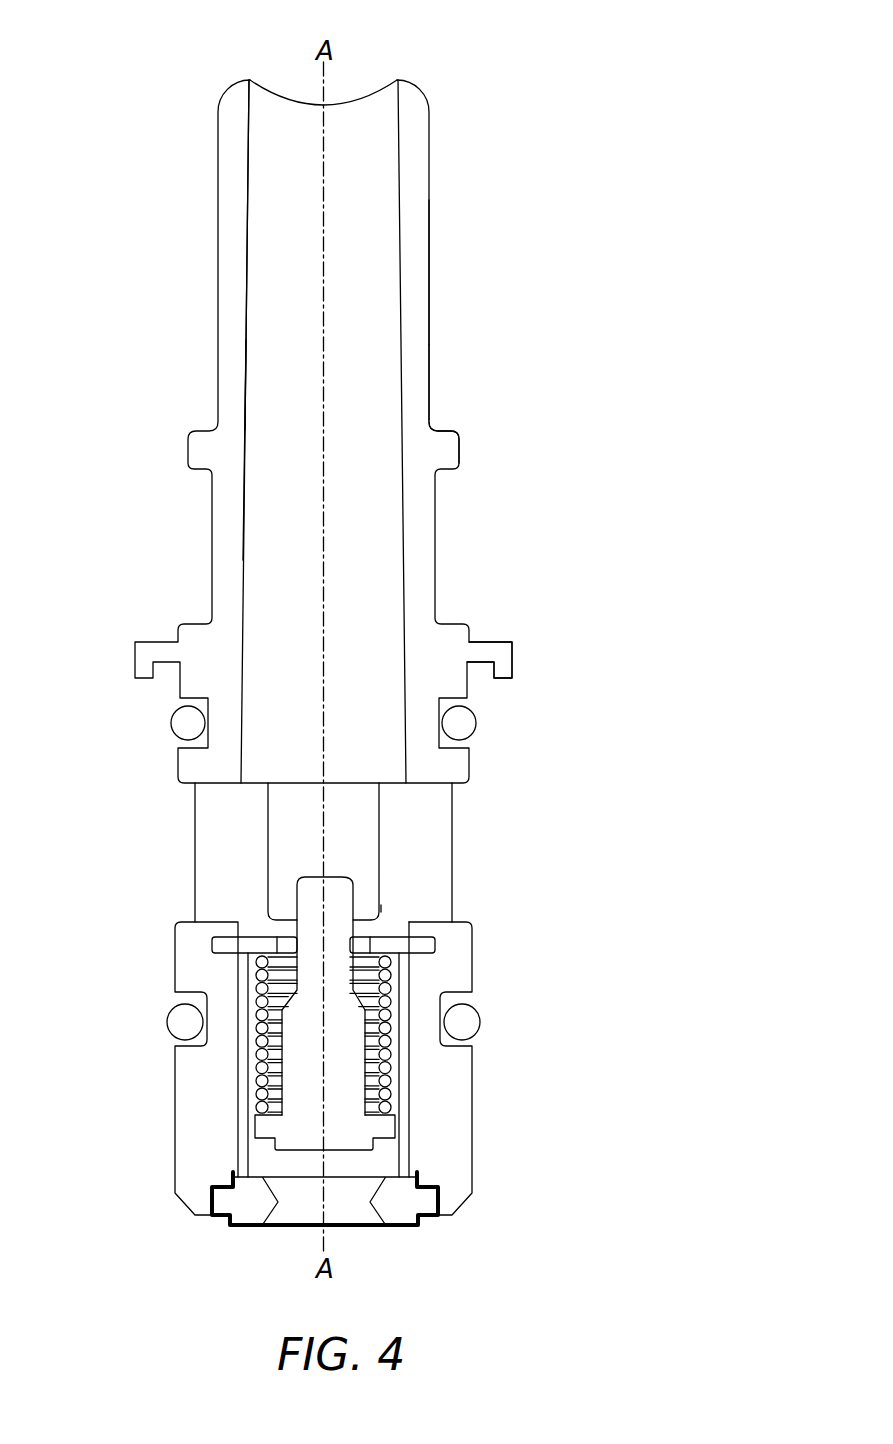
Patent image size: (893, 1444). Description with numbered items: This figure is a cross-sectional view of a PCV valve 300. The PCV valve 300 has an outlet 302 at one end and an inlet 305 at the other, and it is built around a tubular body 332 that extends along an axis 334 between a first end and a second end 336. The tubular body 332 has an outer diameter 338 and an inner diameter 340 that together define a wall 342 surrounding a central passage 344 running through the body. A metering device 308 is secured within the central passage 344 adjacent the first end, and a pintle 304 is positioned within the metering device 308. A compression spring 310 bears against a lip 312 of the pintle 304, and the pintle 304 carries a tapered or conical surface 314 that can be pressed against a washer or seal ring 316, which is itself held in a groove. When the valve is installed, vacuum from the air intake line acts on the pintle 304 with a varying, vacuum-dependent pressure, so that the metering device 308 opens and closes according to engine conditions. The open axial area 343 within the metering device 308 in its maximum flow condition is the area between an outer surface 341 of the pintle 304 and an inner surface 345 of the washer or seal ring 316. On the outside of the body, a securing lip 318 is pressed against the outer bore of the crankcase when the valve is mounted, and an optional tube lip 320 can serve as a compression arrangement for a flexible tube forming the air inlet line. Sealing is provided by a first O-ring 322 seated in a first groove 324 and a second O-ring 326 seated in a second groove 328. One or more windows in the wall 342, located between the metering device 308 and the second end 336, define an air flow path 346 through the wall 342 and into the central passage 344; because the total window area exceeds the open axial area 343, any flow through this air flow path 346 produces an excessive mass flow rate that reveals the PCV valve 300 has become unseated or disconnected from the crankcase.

The PCV valve 300 is at (487, 156).
The outlet 302 is at (434, 27).
The pintle 304 is at (313, 905).
The inlet 305 is at (376, 1264).
The metering device 308 is at (106, 1224).
The compression spring 310 is at (262, 988).
The lip 312 is at (268, 1143).
The tapered or conical surface 314 is at (397, 987).
The washer or seal ring 316 is at (392, 938).
The securing lip 318 is at (515, 660).
The tube lip 320 is at (460, 456).
The first O-ring 322 is at (463, 1022).
The first groove 324 is at (193, 1047).
The second O-ring 326 is at (480, 722).
The second groove 328 is at (187, 693).
The tubular body 332 is at (430, 267).
The axis 334 is at (323, 237).
The second end 336 is at (184, 41).
The outer diameter 338 is at (430, 385).
The inner diameter 340 is at (258, 340).
The outer surface 341 is at (258, 923).
The wall 342 is at (233, 272).
The open axial area 343 is at (384, 903).
The central passage 344 is at (302, 511).
The inner surface 345 is at (283, 947).
The air flow path 346 is at (347, 807).